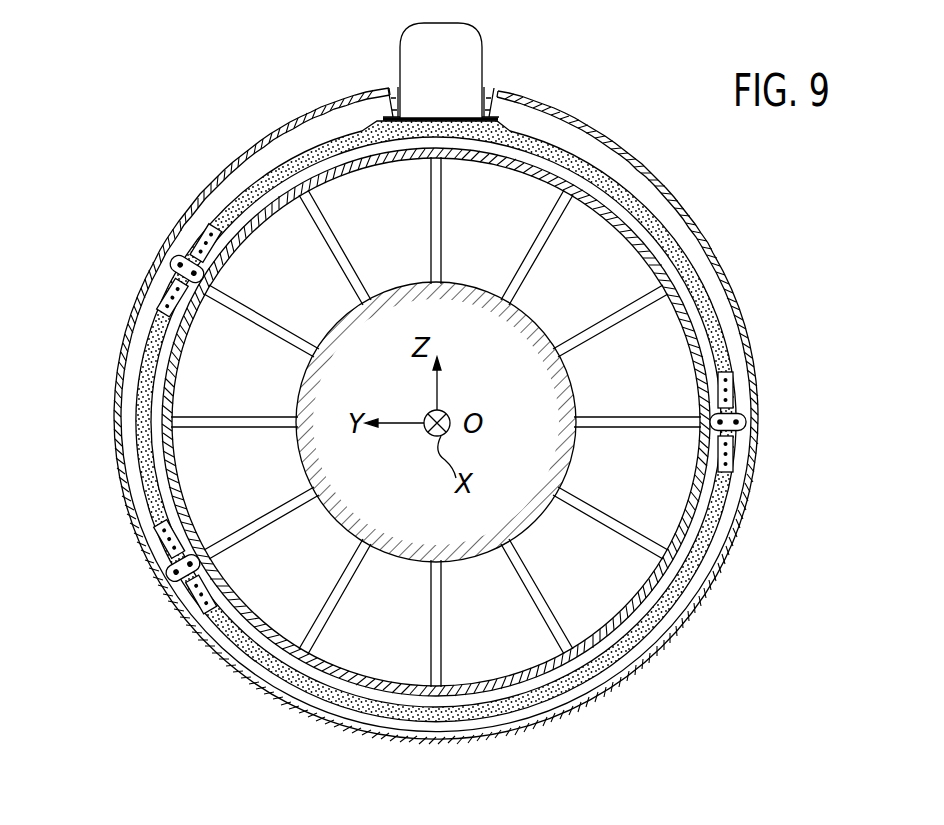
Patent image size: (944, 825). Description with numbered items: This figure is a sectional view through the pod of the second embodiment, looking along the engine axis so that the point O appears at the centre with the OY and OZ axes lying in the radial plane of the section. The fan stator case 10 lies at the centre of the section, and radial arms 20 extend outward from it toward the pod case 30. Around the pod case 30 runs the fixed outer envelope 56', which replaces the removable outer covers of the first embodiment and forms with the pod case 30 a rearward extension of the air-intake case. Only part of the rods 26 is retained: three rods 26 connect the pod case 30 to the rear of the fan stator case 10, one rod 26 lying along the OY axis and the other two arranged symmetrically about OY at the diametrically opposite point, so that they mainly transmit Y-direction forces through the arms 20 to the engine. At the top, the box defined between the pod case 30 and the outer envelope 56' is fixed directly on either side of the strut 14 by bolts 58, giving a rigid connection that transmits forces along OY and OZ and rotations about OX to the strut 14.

The fan stator case 10 is at (683, 530).
The strut 14 is at (432, 50).
The arms 20 is at (438, 261).
The rods 26 is at (180, 266).
The pod case 30 is at (690, 253).
The fixed outer envelope 56' is at (401, 416).
The bolts 58 is at (386, 102).